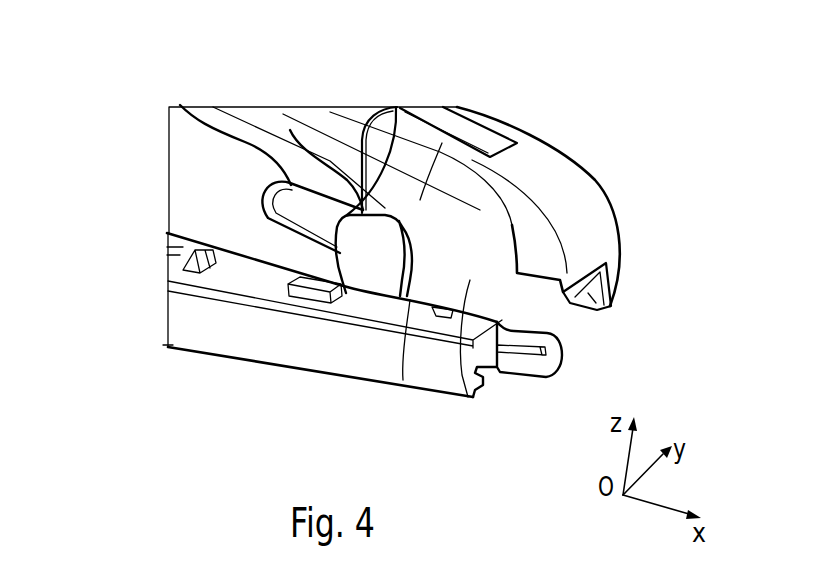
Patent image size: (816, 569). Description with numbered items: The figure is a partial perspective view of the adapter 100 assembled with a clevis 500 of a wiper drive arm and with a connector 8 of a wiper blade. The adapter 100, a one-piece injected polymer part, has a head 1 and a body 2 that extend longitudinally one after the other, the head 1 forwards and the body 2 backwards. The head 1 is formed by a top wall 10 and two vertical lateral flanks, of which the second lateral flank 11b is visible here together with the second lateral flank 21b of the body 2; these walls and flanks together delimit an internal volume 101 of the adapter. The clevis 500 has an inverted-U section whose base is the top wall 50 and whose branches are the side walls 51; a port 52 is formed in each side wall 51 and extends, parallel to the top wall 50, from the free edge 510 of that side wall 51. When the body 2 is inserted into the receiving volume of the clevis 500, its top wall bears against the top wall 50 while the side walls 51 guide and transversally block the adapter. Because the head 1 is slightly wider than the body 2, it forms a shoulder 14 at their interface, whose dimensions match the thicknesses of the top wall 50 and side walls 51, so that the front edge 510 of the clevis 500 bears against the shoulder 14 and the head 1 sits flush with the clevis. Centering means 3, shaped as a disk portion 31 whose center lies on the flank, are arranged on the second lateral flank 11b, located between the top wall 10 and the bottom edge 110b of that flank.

The clevis 500 is at (137, 157).
The side wall 51 is at (200, 190).
The port 52 is at (180, 105).
The free edge 510 is at (290, 130).
The top wall 50 is at (367, 112).
The shoulder 14 is at (395, 107).
The disk portion 31 is at (382, 216).
The body 2 is at (330, 229).
The second lateral flank of the body 21b is at (290, 217).
The centering means 3 is at (360, 252).
The connector 8 is at (265, 335).
The head 1 is at (528, 103).
The adapter 100 is at (608, 148).
The top wall of the head 10 is at (568, 199).
The internal volume 101 is at (575, 320).
The second lateral flank of the head 11b is at (470, 397).
The bottom edge 110b is at (403, 380).